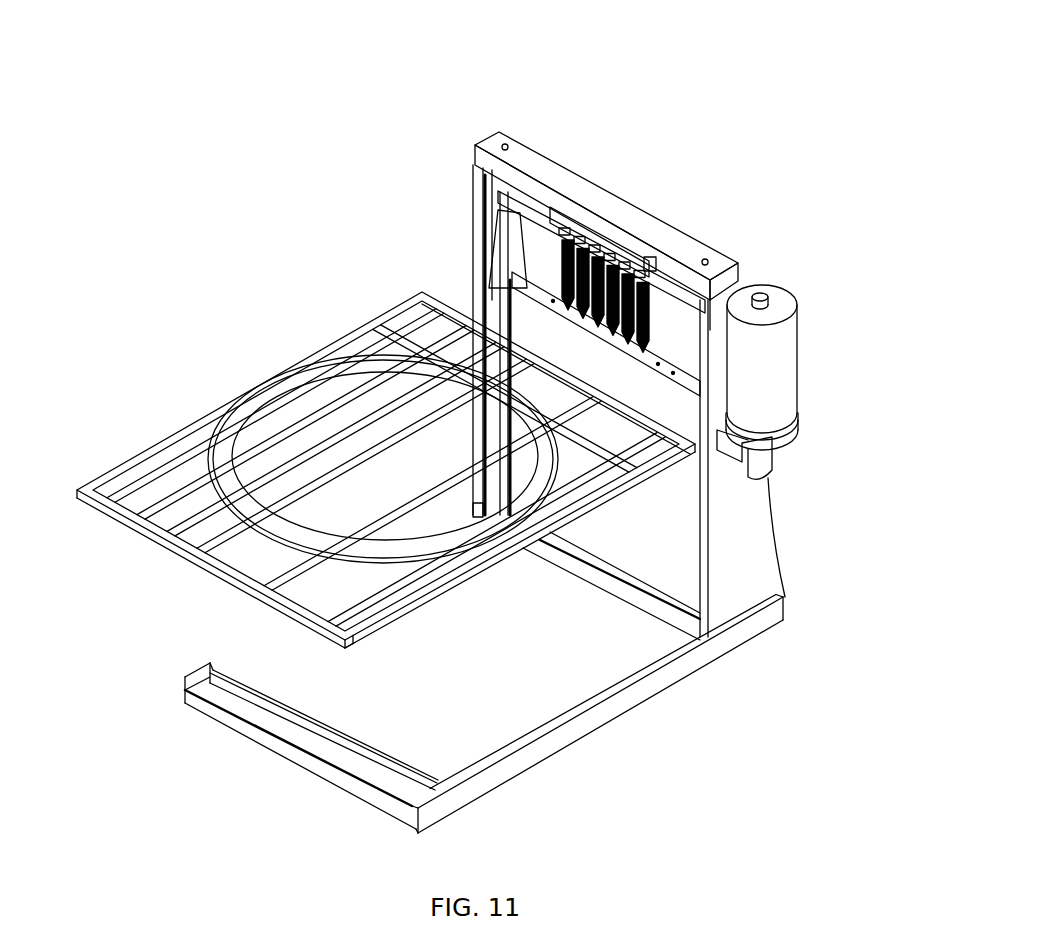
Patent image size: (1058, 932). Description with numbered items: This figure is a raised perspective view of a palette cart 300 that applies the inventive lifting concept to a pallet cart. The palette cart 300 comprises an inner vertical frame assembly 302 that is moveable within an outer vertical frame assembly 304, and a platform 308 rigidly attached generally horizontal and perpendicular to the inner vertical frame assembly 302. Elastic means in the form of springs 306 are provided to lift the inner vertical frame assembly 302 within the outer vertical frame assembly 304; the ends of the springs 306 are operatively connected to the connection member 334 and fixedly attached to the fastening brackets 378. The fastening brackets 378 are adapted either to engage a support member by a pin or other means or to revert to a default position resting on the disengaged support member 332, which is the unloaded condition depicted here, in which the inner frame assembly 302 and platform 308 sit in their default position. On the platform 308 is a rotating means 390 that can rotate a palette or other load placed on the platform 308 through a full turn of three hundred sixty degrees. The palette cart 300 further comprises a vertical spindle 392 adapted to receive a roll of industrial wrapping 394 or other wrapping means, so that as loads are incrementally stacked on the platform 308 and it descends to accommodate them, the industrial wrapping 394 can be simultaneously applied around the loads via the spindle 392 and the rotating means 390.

The palette cart 300 is at (462, 422).
The inner vertical frame assembly 302 is at (670, 384).
The outer vertical frame assembly 304 is at (740, 236).
The springs 306 is at (548, 249).
The platform 308 is at (167, 440).
The disengaged support member 332 is at (543, 196).
The connection member 334 is at (545, 295).
The fastening brackets 378 is at (652, 258).
The rotating means 390 is at (260, 387).
The vertical spindle 392 is at (762, 301).
The industrial wrapping 394 is at (773, 377).